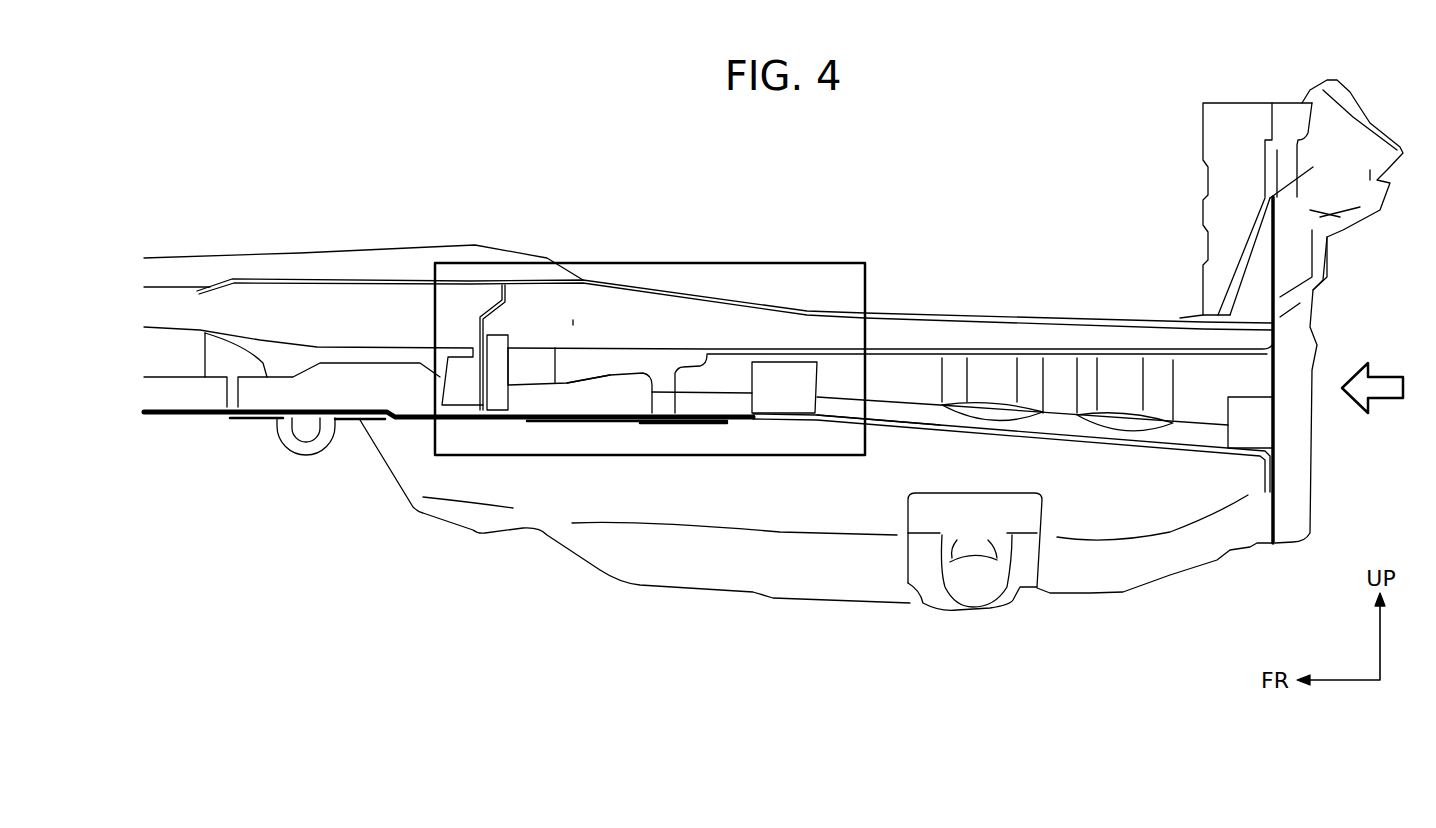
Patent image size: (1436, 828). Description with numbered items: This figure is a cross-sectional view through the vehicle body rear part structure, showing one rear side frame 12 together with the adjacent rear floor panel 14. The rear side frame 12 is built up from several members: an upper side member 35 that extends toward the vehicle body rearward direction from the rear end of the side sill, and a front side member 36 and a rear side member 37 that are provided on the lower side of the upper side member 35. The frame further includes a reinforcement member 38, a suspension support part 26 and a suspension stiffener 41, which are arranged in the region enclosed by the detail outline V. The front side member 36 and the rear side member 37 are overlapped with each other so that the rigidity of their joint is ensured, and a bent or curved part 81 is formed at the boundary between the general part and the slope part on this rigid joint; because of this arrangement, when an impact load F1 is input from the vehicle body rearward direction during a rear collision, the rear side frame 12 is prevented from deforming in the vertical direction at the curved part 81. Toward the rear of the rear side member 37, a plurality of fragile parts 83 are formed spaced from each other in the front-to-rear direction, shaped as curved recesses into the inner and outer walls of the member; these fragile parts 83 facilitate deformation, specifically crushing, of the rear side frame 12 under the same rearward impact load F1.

The rear side frame 12 is at (708, 470).
The rear floor panel 14 is at (1163, 485).
The suspension support part 26 is at (492, 403).
The upper side member 35 is at (573, 320).
The front side member 36 is at (527, 420).
The rear side member 37 is at (887, 428).
The reinforcement member 38 is at (785, 397).
The suspension stiffener 41 is at (612, 397).
The curved part 81 is at (732, 415).
The fragile parts 83 is at (997, 375).
The enlarged view region V is at (668, 262).
The impact load F1 is at (1382, 373).